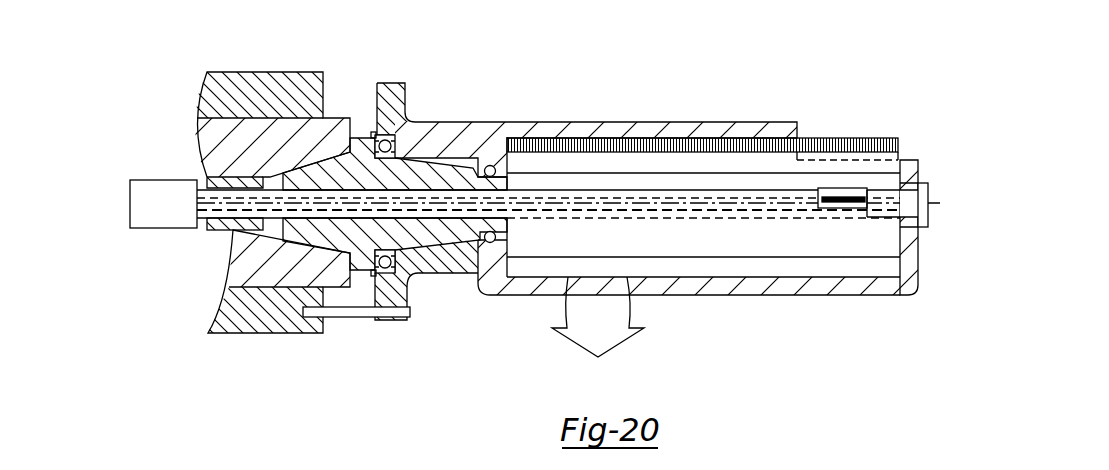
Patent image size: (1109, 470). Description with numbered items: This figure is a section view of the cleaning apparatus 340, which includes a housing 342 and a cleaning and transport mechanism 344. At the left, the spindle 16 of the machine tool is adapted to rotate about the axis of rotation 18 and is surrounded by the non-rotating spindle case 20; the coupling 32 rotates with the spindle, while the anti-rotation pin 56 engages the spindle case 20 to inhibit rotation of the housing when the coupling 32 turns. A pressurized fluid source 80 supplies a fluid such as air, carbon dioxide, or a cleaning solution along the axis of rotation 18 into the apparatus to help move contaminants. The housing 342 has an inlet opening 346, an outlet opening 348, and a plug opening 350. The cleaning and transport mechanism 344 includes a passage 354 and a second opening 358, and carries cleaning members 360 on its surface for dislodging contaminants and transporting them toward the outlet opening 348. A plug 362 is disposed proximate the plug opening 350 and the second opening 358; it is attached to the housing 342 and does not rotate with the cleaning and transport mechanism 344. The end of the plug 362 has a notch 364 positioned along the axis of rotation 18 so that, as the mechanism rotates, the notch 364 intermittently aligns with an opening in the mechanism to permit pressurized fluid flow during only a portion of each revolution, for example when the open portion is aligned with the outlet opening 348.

The spindle 16 is at (237, 135).
The spindle case 20 is at (283, 323).
The pressurized fluid source 80 is at (161, 180).
The axis of rotation 18 is at (219, 205).
The coupling 32 is at (366, 134).
The anti-rotation pin 56 is at (352, 317).
The housing 342 is at (488, 122).
The cleaning and transport mechanism 344 is at (748, 252).
The cleaning members 360 is at (847, 140).
The inlet opening 346 is at (879, 138).
The notch 364 is at (832, 188).
The second opening 358 is at (885, 215).
The plug opening 350 is at (878, 217).
The plug 362 is at (933, 183).
The outlet opening 348 is at (584, 288).
The passage 354 is at (690, 205).
The cleaning apparatus 340 is at (674, 84).